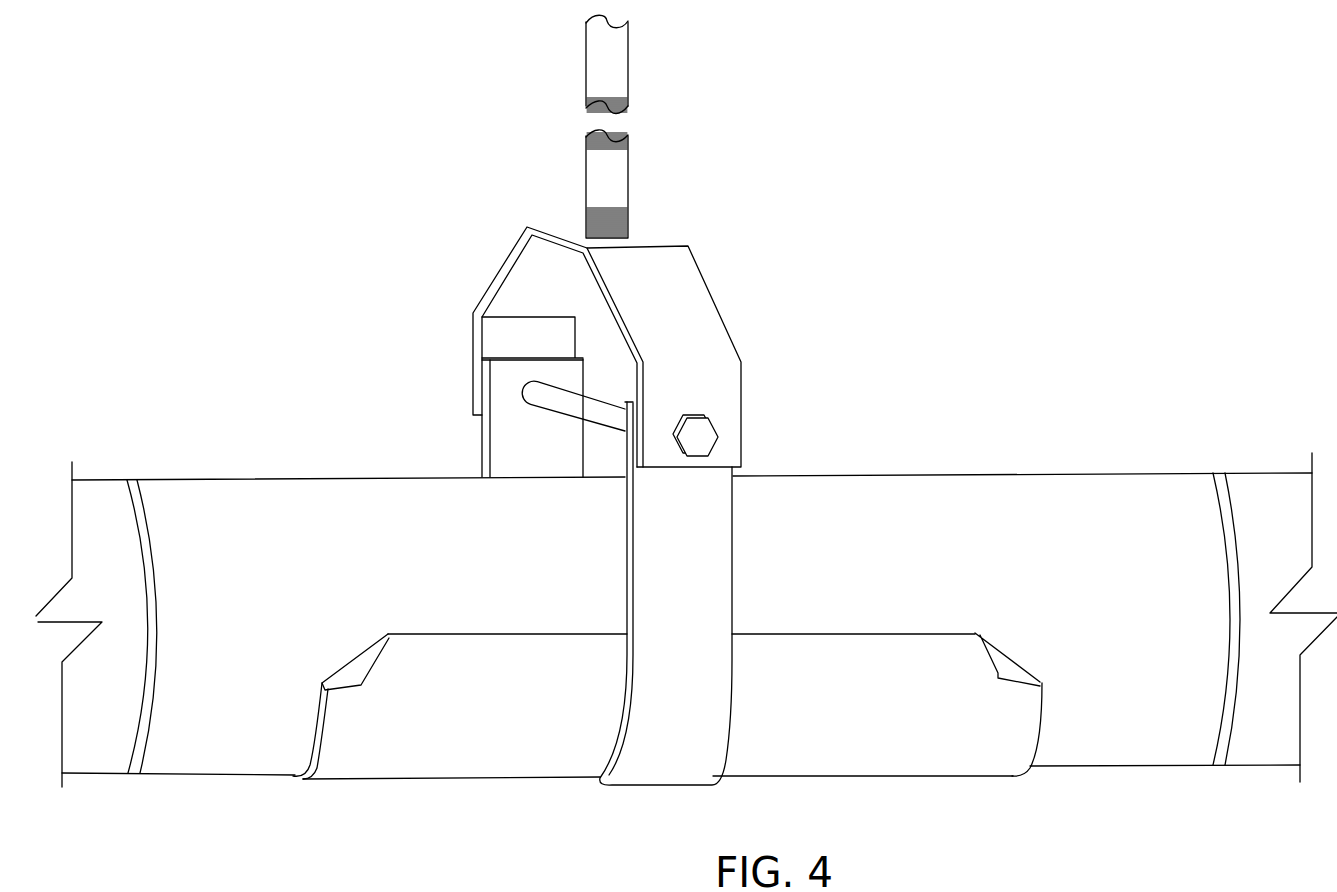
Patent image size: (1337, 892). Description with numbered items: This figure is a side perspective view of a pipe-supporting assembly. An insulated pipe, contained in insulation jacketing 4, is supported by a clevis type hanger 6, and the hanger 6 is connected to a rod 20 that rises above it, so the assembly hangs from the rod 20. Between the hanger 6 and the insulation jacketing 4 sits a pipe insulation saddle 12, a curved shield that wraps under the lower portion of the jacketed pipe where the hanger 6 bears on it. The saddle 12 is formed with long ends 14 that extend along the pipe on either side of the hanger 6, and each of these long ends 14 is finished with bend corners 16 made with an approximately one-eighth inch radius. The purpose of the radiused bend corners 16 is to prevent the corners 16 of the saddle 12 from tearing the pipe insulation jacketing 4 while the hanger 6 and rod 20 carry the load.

The insulation jacketing 4 is at (1117, 735).
The clevis type hanger 6 is at (662, 770).
The pipe insulation saddle 12 is at (753, 755).
The long ends 14 is at (320, 770).
The bend corners 16 is at (348, 670).
The rod 20 is at (629, 104).